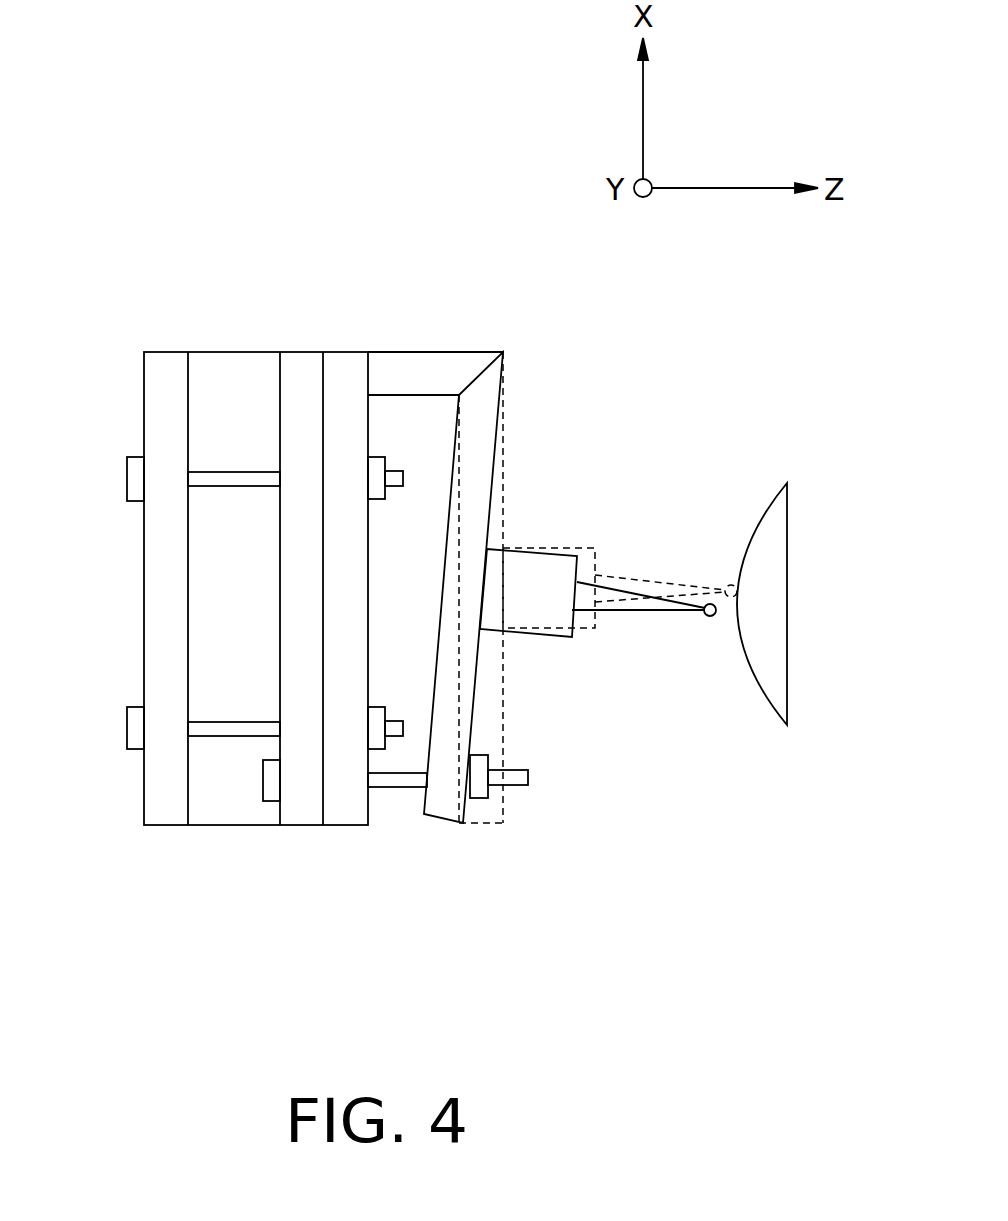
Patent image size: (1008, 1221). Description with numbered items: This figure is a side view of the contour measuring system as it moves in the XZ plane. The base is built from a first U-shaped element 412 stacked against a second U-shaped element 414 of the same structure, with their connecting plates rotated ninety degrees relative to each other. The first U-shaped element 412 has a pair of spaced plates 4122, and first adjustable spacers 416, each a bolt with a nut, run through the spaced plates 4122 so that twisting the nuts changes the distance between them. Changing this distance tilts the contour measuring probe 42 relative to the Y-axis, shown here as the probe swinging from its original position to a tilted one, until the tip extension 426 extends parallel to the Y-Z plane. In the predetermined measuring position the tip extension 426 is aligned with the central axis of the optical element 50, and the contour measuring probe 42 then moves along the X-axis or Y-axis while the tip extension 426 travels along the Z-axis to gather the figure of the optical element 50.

The first U-shaped element 412 is at (393, 305).
The second U-shaped element 414 is at (235, 352).
The first adjustable spacer 416 is at (402, 781).
The spaced plate 4122 is at (445, 800).
The contour measuring probe 42 is at (535, 563).
The tip extension 426 is at (640, 605).
The optical element 50 is at (797, 598).